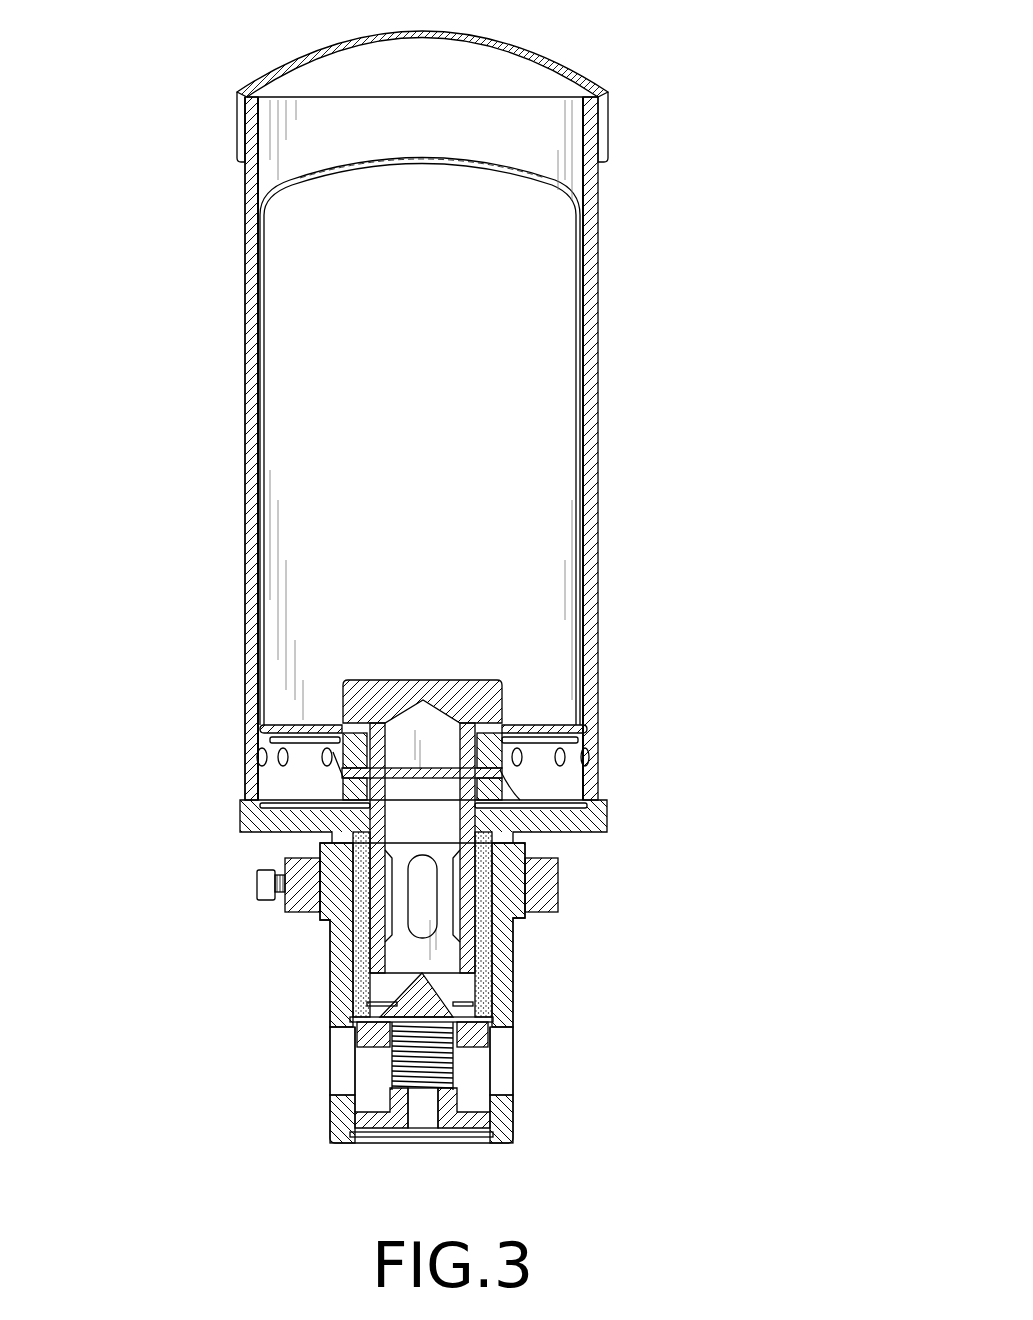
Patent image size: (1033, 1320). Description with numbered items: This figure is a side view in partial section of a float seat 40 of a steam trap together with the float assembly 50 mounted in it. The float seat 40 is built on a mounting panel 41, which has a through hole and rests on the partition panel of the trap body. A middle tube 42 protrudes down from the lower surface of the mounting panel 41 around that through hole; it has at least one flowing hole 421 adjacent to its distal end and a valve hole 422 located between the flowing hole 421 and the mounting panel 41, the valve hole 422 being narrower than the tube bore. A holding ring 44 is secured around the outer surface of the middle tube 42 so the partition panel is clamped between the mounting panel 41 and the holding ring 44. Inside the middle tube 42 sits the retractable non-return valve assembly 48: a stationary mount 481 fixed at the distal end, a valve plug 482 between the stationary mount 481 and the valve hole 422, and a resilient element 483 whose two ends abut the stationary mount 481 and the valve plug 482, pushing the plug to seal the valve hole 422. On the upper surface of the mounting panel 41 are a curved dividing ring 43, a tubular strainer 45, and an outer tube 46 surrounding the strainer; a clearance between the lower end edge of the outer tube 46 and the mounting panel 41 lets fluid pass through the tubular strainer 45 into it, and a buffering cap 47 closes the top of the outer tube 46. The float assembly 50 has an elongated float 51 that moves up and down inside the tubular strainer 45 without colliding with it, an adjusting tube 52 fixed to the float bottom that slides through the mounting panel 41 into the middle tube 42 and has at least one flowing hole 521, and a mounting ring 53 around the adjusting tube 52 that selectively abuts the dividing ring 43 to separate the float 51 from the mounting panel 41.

The float seat 40 is at (227, 652).
The mounting panel 41 is at (580, 820).
The middle tube 42 is at (507, 970).
The flowing hole 421 is at (340, 1063).
The valve hole 422 is at (353, 1003).
The dividing ring 43 is at (278, 803).
The holding ring 44 is at (548, 883).
The tubular strainer 45 is at (593, 283).
The outer tube 46 is at (598, 367).
The buffering cap 47 is at (565, 62).
The non-return valve assembly 48 is at (377, 1147).
The stationary mount 481 is at (477, 1125).
The valve plug 482 is at (478, 1042).
The resilient element 483 is at (452, 1054).
The float assembly 50 is at (330, 580).
The float 51 is at (530, 160).
The adjusting tube 52 is at (497, 698).
The mounting ring 53 is at (490, 747).
The flowing hole 521 is at (430, 908).